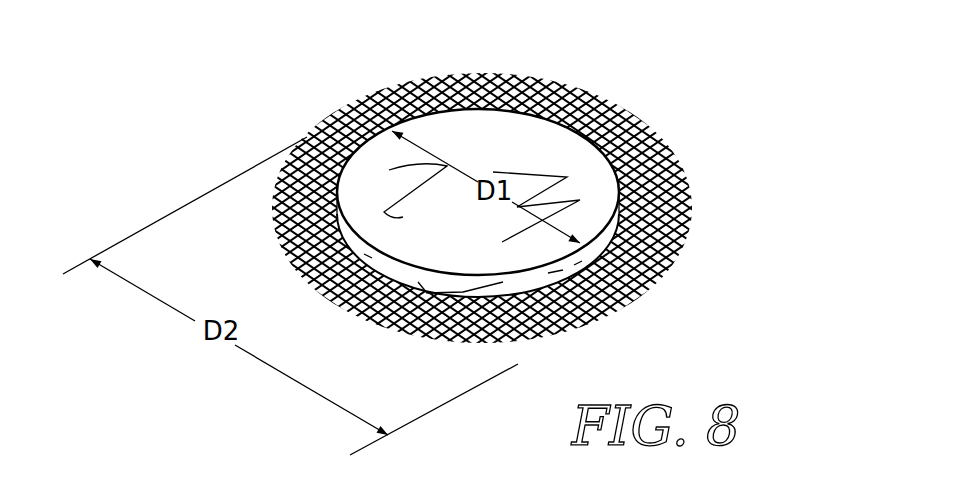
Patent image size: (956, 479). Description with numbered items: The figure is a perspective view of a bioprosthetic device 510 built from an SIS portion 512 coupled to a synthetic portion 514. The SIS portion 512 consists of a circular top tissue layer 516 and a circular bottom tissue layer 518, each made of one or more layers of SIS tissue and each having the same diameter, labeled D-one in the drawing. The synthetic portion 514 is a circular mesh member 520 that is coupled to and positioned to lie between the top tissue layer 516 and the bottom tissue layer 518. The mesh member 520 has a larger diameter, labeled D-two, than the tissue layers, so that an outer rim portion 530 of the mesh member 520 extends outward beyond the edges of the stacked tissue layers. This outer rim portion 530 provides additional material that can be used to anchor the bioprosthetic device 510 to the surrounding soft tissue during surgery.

The bioprosthetic device 510 is at (533, 211).
The SIS portion 512 is at (478, 159).
The synthetic portion 514 is at (533, 232).
The top tissue layer 516 is at (513, 127).
The bottom tissue layer 518 is at (420, 316).
The mesh member 520 is at (530, 232).
The outer rim portion 530 is at (530, 232).